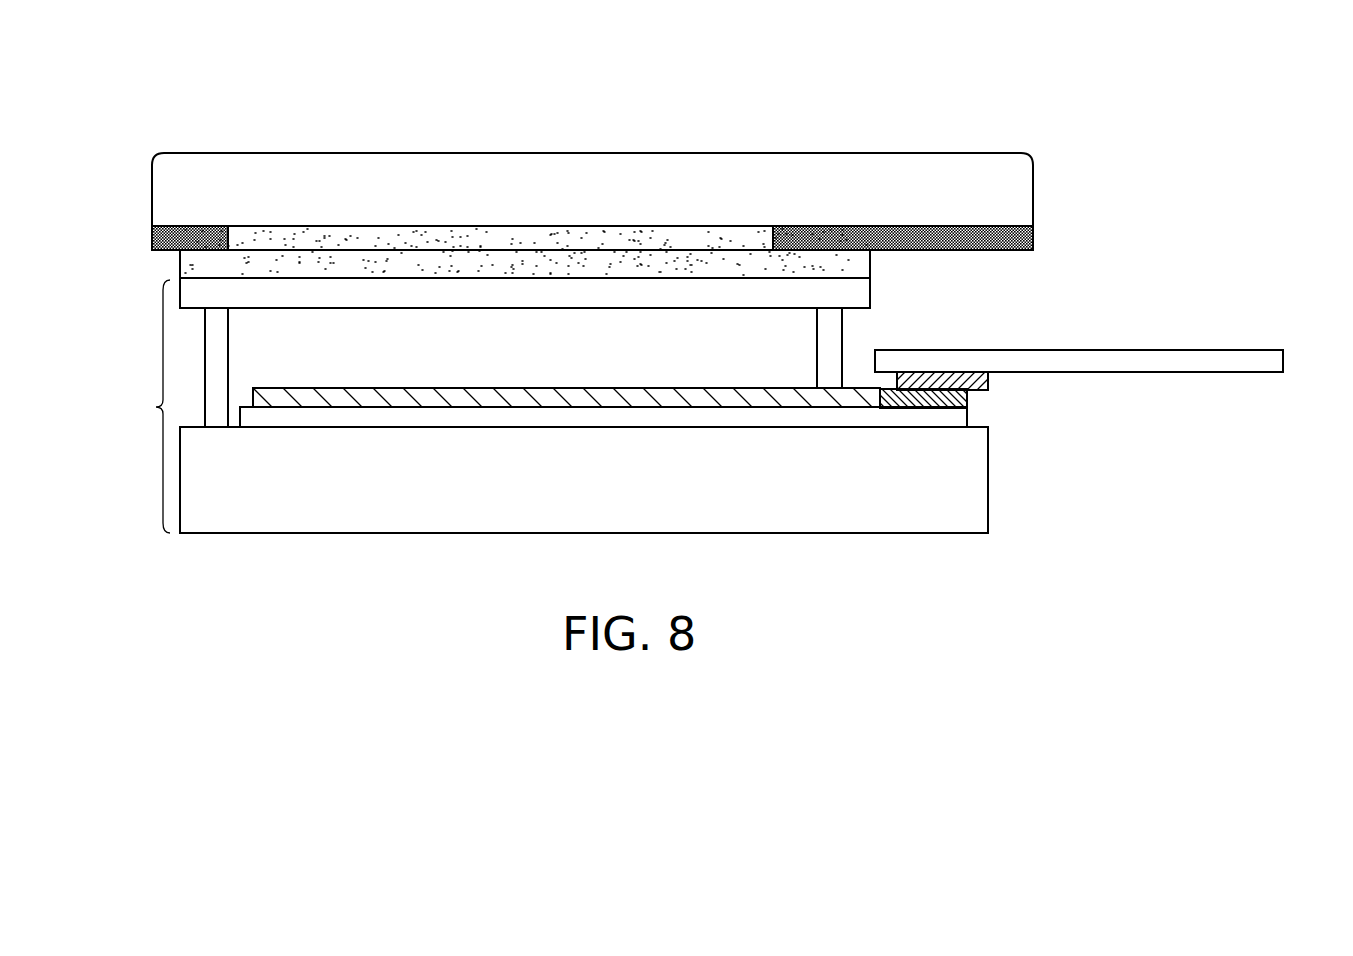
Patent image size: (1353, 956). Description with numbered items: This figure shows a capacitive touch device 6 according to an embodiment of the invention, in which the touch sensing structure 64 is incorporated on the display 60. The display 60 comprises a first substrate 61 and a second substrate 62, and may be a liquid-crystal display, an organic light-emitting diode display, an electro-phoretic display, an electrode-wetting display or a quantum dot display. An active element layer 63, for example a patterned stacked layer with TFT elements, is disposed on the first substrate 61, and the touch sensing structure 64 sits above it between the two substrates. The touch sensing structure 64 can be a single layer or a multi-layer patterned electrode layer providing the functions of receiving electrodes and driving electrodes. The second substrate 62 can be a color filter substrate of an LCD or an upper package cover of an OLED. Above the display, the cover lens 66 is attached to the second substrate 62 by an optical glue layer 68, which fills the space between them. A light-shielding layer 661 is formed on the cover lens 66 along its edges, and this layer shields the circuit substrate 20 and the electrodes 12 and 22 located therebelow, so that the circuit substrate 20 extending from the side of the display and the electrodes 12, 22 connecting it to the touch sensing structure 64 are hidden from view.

The capacitive touch device 6 is at (1113, 283).
The electrode 12 is at (957, 397).
The circuit substrate 20 is at (1213, 360).
The electrode 22 is at (938, 382).
The display 60 is at (144, 406).
The first substrate 61 is at (975, 478).
The second substrate 62 is at (544, 296).
The active element layer 63 is at (955, 418).
The touch sensing structure 64 is at (338, 398).
The cover lens 66 is at (541, 167).
The light-shielding layer 661 is at (903, 232).
The optical glue layer 68 is at (400, 248).